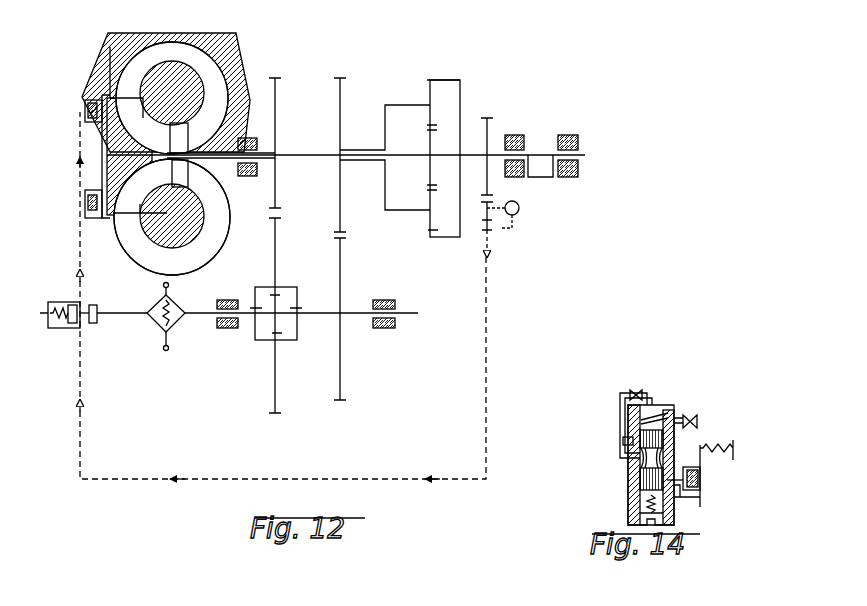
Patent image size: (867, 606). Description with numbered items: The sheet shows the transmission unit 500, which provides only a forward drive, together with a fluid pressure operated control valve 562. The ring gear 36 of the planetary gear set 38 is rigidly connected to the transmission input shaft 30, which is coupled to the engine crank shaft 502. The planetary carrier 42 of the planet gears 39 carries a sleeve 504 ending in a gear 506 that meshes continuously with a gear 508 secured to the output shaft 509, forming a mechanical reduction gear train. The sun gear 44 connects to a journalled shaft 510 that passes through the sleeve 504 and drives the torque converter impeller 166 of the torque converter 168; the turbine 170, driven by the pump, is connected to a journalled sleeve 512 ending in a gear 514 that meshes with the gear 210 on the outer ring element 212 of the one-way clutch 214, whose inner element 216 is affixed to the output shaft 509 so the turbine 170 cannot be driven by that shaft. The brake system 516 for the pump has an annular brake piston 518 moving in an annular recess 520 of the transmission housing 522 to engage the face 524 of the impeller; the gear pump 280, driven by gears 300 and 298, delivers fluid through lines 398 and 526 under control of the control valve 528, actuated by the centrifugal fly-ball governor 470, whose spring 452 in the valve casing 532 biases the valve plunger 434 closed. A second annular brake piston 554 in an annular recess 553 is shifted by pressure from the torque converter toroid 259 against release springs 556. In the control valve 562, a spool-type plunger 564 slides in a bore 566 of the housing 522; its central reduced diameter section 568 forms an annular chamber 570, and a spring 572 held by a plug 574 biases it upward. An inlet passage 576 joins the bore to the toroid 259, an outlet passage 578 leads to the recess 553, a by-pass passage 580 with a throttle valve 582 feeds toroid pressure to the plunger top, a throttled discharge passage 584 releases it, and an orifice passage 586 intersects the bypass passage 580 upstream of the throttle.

In FIG. 12, the transmission input shaft 30 is at (496, 152).
In FIG. 12, the ring gear 36 is at (460, 88).
In FIG. 12, the planetary gear set 38 is at (442, 75).
In FIG. 12, the planet gears 39 is at (430, 98).
In FIG. 12, the planetary carrier 42 is at (385, 110).
In FIG. 12, the sun gear 44 is at (430, 140).
In FIG. 12, the torque converter impeller 166 is at (110, 70).
In FIG. 12, the torque converter 168 is at (215, 50).
In FIG. 12, the turbine 170 is at (188, 130).
In FIG. 12, the gear 210 is at (276, 378).
In FIG. 12, the outer ring element 212 is at (285, 340).
In FIG. 12, the one-way clutch 214 is at (252, 344).
In FIG. 12, the inner element 216 is at (280, 328).
In FIG. 12, the torque converter toroid 259 is at (190, 269).
In FIG. 12, the gear pump 280 is at (521, 215).
In FIG. 12, the gear 298 is at (476, 230).
In FIG. 12, the gear 300 is at (487, 190).
In FIG. 12, the line 398 is at (82, 482).
In FIG. 12, the valve plunger 434 is at (97, 308).
In FIG. 12, the spring 452 is at (56, 328).
In FIG. 12, the centrifugal fly-ball governor 470 is at (172, 330).
In FIG. 12, the transmission unit 500 is at (388, 46).
In FIG. 12, the engine crank shaft 502 is at (542, 178).
In FIG. 12, the sleeve 504 is at (362, 138).
In FIG. 12, the gear 506 is at (340, 95).
In FIG. 12, the gear 508 is at (340, 258).
In FIG. 12, the output shaft 509 is at (405, 313).
In FIG. 12, the shaft 510 is at (303, 160).
In FIG. 12, the sleeve 512 is at (228, 160).
In FIG. 12, the gear 514 is at (275, 96).
In FIG. 12, the brake system 516 is at (67, 355).
In FIG. 12, the annular brake piston 518 is at (88, 200).
In FIG. 12, the annular recess 520 is at (85, 102).
In FIG. 12, the transmission housing 522 is at (100, 95).
In FIG. 14, the transmission housing 522 is at (630, 492).
In FIG. 12, the face 524 is at (107, 133).
In FIG. 12, the line 526 is at (80, 262).
In FIG. 12, the control valve 528 is at (93, 330).
In FIG. 12, the valve casing 532 is at (48, 312).
In FIG. 14, the annular recess 553 is at (700, 484).
In FIG. 14, the annular brake piston 554 is at (700, 475).
In FIG. 14, the release springs 556 is at (735, 453).
In FIG. 14, the control valve 562 is at (690, 392).
In FIG. 14, the spool-type plunger 564 is at (697, 425).
In FIG. 14, the bore 566 is at (660, 412).
In FIG. 14, the central reduced diameter section 568 is at (665, 445).
In FIG. 14, the annular chamber 570 is at (641, 462).
In FIG. 14, the spring 572 is at (668, 508).
In FIG. 14, the plug 574 is at (656, 526).
In FIG. 14, the inlet passage 576 is at (620, 458).
In FIG. 14, the outlet passage 578 is at (700, 498).
In FIG. 14, the by-pass passage 580 is at (650, 392).
In FIG. 14, the throttle valve 582 is at (634, 388).
In FIG. 14, the throttled discharge passage 584 is at (692, 414).
In FIG. 14, the orifice passage 586 is at (623, 435).